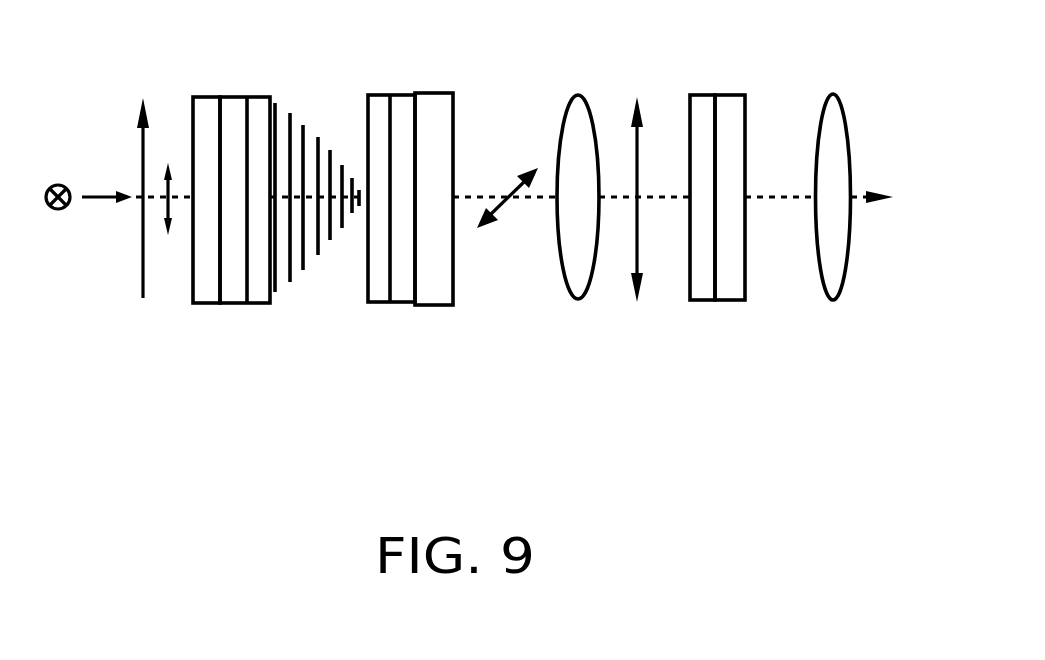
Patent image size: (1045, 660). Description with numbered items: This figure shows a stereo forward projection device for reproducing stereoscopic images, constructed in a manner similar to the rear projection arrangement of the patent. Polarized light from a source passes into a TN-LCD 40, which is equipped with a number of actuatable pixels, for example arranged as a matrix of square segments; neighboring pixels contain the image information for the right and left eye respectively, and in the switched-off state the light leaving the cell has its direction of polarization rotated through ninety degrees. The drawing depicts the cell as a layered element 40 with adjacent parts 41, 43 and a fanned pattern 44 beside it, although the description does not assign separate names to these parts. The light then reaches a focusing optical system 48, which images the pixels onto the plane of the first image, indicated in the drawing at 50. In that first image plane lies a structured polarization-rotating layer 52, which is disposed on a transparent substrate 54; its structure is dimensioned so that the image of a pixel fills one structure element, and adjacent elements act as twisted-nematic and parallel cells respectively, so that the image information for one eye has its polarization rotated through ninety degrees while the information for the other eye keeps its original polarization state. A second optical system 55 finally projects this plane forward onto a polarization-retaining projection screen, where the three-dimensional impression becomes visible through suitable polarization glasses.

The TN-LCD 40 is at (301, 203).
The polarizer 41 is at (203, 103).
The liquid crystal cell 43 is at (265, 100).
The electric field / phase grating 44 is at (302, 125).
The focusing optical system 48 is at (580, 107).
The projection screen 50 is at (640, 110).
The structured polarization-rotating layer 52 is at (700, 110).
The transparent substrate 54 is at (735, 130).
The second optical system 55 is at (832, 113).